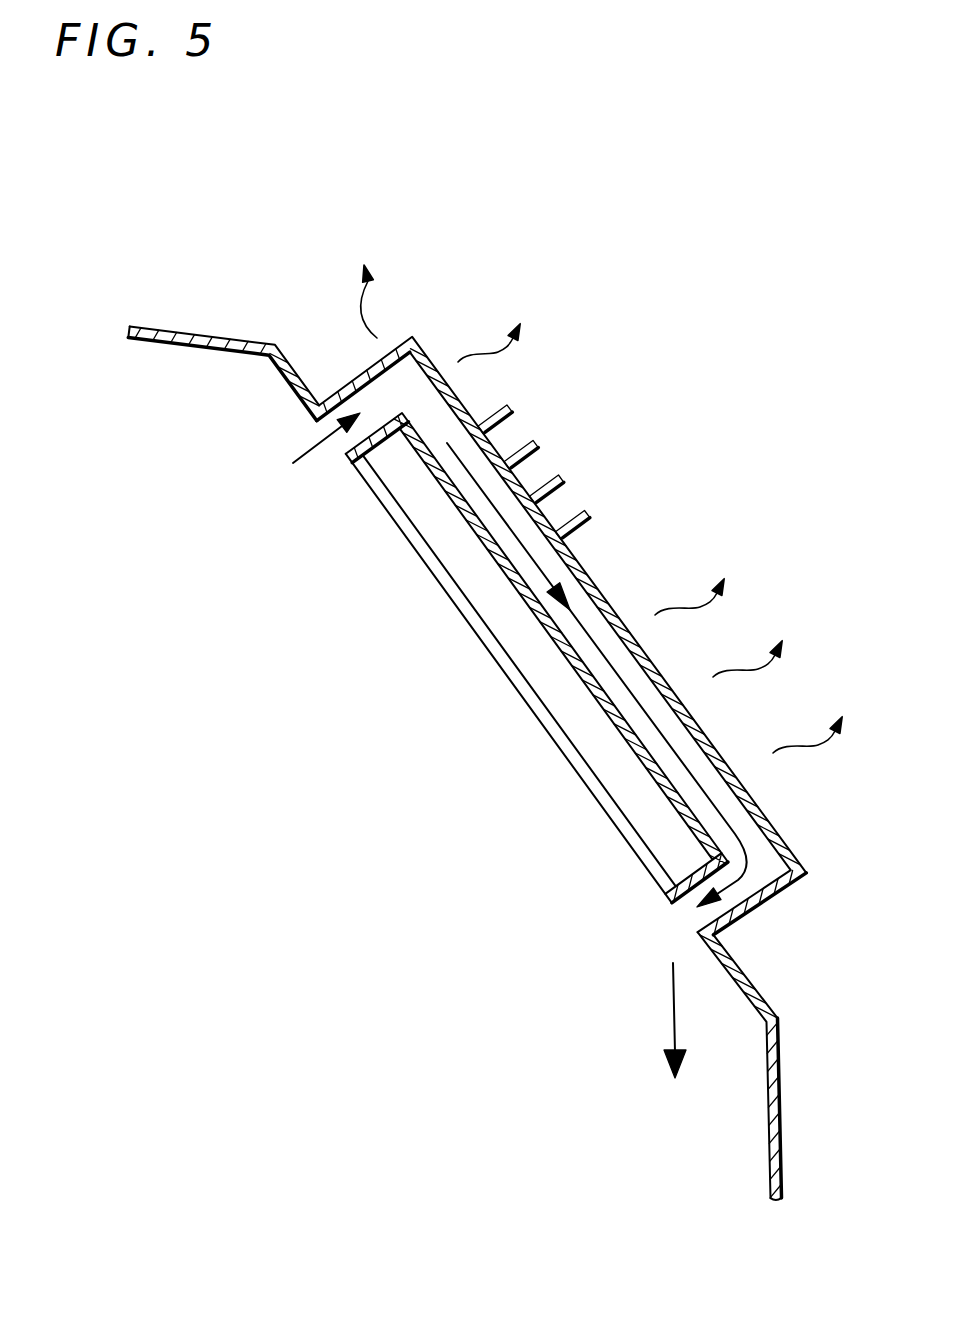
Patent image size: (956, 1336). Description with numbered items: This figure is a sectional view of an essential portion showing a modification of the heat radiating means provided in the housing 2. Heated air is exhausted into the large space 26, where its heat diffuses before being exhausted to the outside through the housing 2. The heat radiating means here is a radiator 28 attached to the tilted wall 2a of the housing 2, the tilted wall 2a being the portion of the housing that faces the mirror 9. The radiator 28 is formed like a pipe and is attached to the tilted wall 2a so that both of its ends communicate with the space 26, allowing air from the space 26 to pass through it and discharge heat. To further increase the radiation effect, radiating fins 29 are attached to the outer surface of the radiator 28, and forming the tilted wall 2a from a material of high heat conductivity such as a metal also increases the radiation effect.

The housing 2 is at (230, 340).
The tilted wall 2a is at (751, 983).
The mirror 9 is at (597, 803).
The space 26 is at (257, 566).
The radiator 28 is at (593, 578).
The radiating fin 29 is at (513, 405).